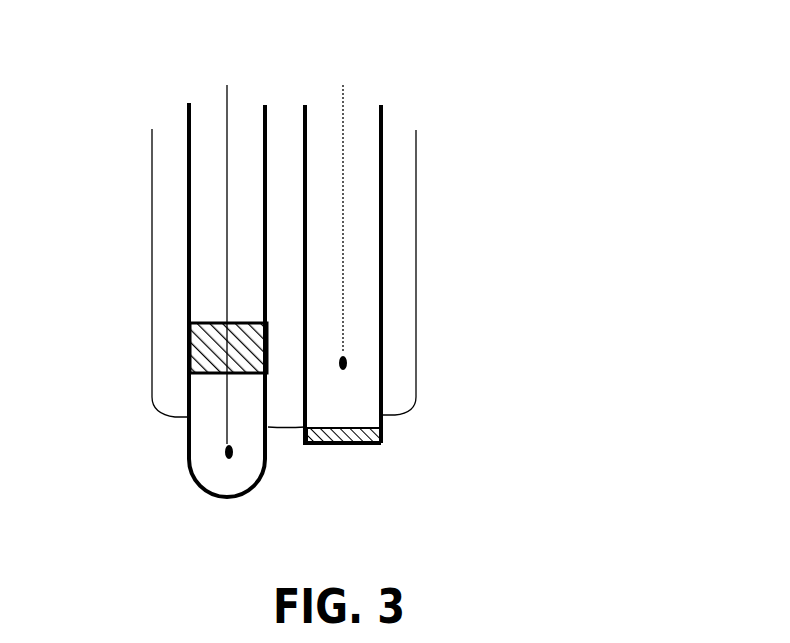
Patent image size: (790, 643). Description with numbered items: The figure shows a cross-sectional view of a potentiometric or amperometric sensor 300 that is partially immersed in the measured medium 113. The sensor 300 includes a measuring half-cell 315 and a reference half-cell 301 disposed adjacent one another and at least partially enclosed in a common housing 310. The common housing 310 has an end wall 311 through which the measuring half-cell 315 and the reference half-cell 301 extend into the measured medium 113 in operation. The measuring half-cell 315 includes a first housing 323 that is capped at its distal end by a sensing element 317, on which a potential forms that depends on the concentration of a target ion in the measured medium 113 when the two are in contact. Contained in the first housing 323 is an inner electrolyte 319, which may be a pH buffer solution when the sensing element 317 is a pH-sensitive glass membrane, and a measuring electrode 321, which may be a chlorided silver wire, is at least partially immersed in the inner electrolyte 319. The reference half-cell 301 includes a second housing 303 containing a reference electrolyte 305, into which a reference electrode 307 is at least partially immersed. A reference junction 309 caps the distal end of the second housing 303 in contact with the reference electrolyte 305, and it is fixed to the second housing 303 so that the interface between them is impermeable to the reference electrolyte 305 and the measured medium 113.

The sensor 300 is at (596, 88).
The reference half-cell 301 is at (395, 114).
The second housing 303 is at (383, 223).
The reference electrolyte 305 is at (362, 263).
The reference electrode 307 is at (345, 306).
The reference junction 309 is at (385, 444).
The common housing 310 is at (420, 167).
The end wall 311 is at (405, 414).
The measuring half-cell 315 is at (181, 116).
The sensing element 317 is at (187, 447).
The inner electrolyte 319 is at (205, 390).
The measuring electrode 321 is at (227, 258).
The first housing 323 is at (186, 211).
The measured medium 113 is at (324, 508).